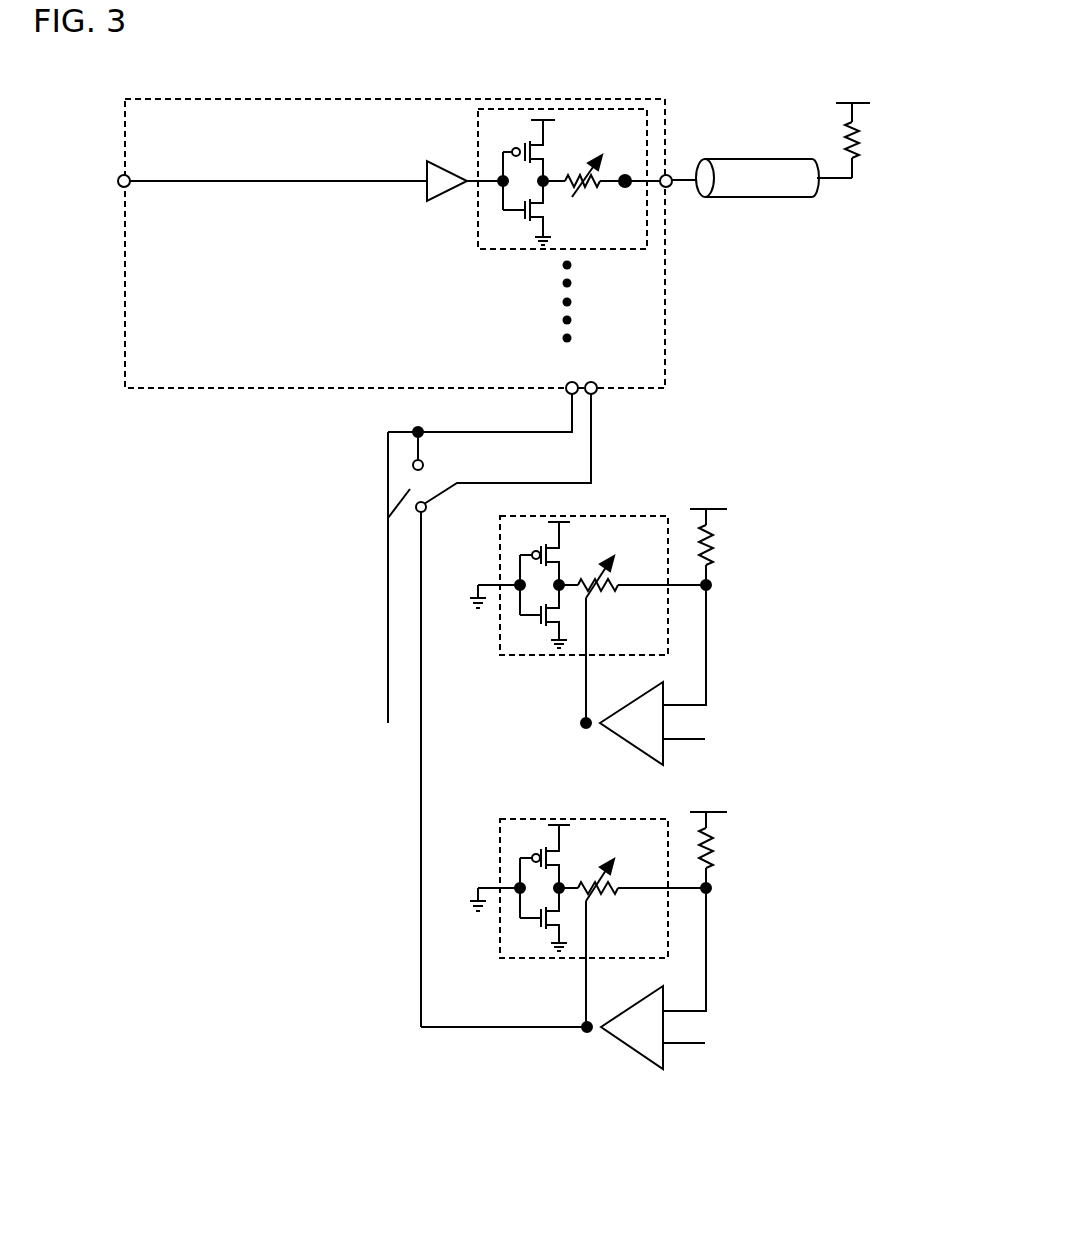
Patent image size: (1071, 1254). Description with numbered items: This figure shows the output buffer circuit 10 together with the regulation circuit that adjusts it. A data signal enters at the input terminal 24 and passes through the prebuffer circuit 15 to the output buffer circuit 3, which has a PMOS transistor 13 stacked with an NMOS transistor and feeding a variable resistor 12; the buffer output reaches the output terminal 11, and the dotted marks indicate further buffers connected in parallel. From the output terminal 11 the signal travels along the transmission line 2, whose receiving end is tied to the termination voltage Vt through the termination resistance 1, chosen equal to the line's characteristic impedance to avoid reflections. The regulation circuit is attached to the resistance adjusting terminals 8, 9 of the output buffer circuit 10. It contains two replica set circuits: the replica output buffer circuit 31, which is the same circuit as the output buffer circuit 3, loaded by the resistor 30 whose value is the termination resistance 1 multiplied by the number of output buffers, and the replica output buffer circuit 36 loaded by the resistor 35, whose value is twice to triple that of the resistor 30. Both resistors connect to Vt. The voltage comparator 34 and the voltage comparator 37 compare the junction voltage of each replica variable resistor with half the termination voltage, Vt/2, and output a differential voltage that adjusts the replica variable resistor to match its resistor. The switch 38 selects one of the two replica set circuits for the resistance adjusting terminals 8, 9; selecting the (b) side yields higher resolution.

The termination resistance 1 is at (857, 152).
The transmission line 2 is at (742, 197).
The output buffer circuit 3 is at (648, 215).
The resistance adjusting terminal 8 is at (594, 396).
The resistance adjusting terminal 9 is at (571, 396).
The output buffer circuit 10 is at (282, 390).
The output terminal 11 is at (668, 167).
The variable resistor 12 is at (583, 160).
The PMOS transistor 13 is at (519, 147).
The prebuffer circuit 15 is at (450, 193).
The input terminal 24 is at (120, 188).
The resistor 30 is at (710, 545).
The replica output buffer circuit 31 is at (668, 615).
The voltage comparator 34 is at (620, 735).
The resistor 35 is at (751, 861).
The replica output buffer circuit 36 is at (618, 923).
The voltage comparator 37 is at (593, 999).
The switch 38 is at (387, 500).